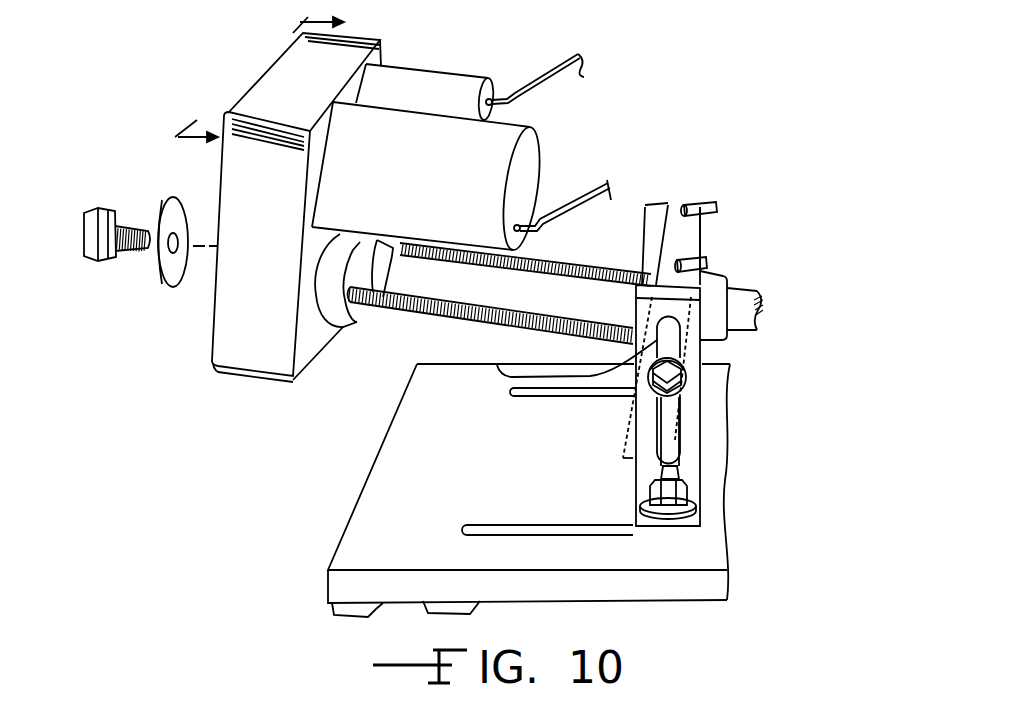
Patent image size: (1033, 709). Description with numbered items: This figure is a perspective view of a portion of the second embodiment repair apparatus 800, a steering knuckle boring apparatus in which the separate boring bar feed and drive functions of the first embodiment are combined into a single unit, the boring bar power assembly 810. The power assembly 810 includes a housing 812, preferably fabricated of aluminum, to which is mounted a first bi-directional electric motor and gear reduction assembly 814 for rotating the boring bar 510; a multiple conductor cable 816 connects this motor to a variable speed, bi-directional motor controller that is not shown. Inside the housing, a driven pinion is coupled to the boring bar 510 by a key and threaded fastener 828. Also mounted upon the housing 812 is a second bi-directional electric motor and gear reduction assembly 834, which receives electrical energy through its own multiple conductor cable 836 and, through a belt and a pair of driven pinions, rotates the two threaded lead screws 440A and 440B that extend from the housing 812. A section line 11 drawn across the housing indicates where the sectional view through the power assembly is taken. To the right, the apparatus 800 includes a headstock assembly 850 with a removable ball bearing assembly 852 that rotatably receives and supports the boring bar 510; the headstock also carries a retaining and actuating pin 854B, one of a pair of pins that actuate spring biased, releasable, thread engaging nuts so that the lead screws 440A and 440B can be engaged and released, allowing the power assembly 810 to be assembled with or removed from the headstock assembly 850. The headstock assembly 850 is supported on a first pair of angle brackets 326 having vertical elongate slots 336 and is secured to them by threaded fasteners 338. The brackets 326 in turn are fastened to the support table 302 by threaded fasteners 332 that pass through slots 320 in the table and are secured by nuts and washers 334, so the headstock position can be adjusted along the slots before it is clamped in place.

The section line 11- 11 is at (274, 91).
The support table 302 is at (382, 513).
The slots 320 is at (463, 530).
The angle brackets 326 is at (647, 232).
The threaded fasteners 332 is at (657, 480).
The nuts and washers 334 is at (643, 505).
The vertical elongate slots 336 is at (497, 365).
The threaded fasteners 338 is at (668, 388).
The threaded lead screw 440A is at (400, 312).
The threaded lead screw 440B is at (517, 255).
The boring bar 510 is at (834, 311).
The second embodiment repair apparatus 800 is at (672, 120).
The boring bar power assembly 810 is at (196, 84).
The housing 812 is at (236, 330).
The first bi-directional electric motor and gear reduction assembly 814 is at (487, 150).
The multiple conductor cable 816 is at (584, 193).
The key and threaded fastener 828 is at (100, 263).
The second bi-directional electric motor and gear reduction assembly 834 is at (443, 87).
The multiple conductor cable 836 is at (584, 76).
The headstock assembly 850 is at (716, 225).
The removable ball bearing assembly 852 is at (712, 290).
The retaining and actuating pin 854B is at (703, 203).